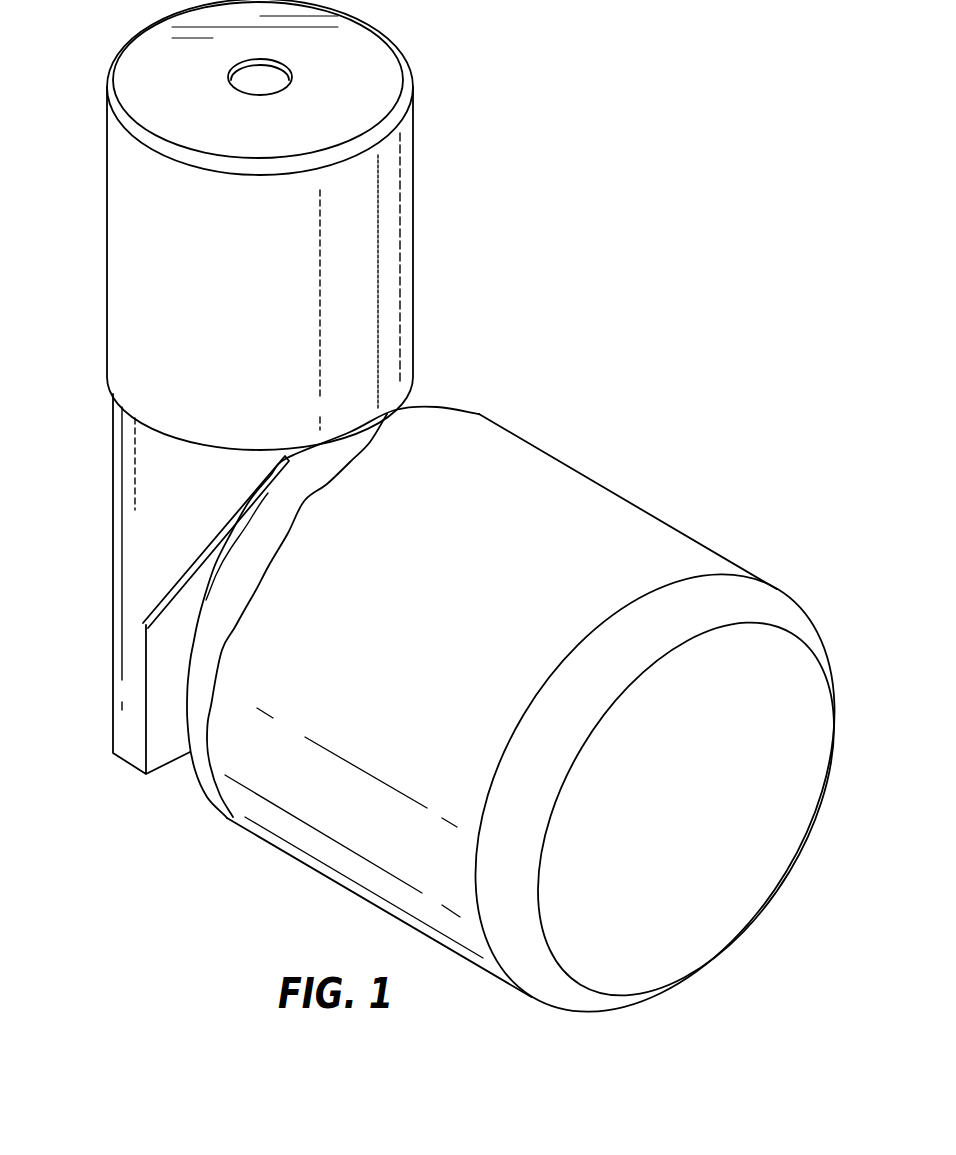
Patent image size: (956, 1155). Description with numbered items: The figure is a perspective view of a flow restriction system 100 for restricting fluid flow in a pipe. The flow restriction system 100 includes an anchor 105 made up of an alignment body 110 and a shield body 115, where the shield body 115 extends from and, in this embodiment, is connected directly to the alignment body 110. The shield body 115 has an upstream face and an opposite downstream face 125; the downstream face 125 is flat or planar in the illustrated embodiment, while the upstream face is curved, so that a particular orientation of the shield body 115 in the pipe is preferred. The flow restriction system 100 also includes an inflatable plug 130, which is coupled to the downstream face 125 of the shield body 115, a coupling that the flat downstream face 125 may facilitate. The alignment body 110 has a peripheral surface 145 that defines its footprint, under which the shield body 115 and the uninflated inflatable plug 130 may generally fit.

The flow restriction system 100 is at (673, 202).
The anchor 105 is at (133, 322).
The alignment body 110 is at (392, 218).
The shield body 115 is at (132, 672).
The downstream face 125 is at (189, 650).
The inflatable plug 130 is at (736, 885).
The peripheral surface 145 is at (284, 296).